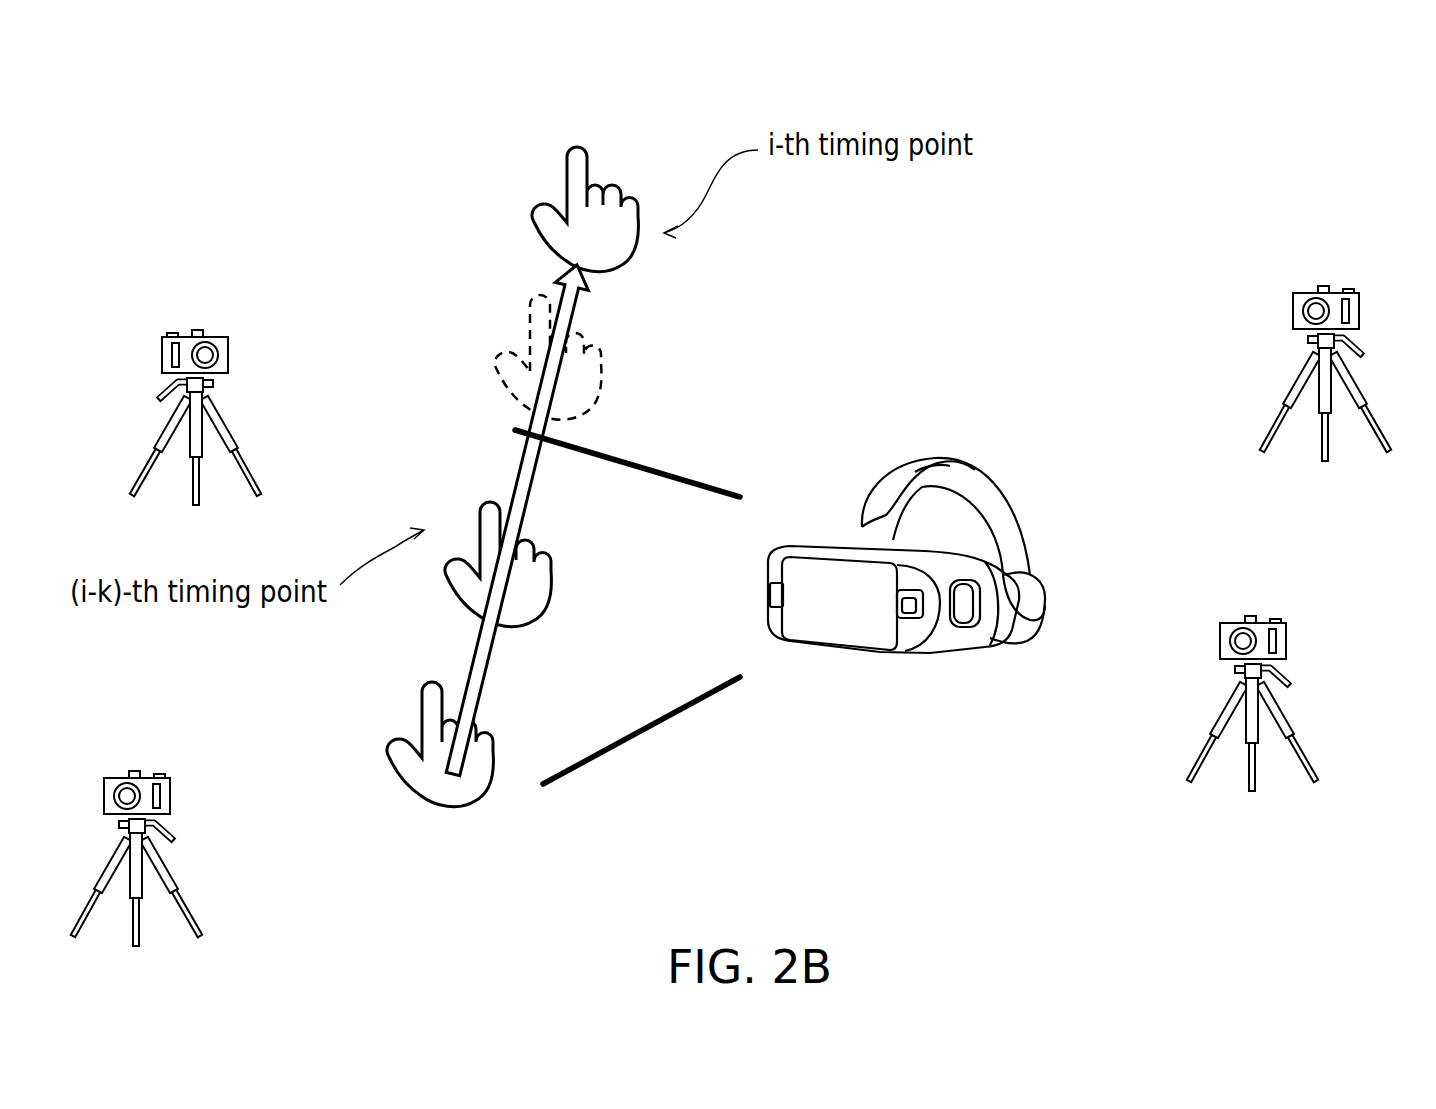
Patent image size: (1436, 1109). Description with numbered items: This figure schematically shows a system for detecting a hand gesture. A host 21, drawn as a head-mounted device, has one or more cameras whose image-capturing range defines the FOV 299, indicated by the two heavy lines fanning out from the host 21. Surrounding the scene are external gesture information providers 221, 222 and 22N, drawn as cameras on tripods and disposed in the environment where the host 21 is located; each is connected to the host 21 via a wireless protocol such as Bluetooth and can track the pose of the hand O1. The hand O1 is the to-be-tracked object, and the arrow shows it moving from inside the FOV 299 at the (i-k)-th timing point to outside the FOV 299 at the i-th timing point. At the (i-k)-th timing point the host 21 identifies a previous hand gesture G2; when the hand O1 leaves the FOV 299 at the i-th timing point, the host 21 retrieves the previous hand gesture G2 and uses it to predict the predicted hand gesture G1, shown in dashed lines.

The host 21 is at (846, 648).
The external gesture information provider 221 is at (1362, 316).
The external gesture information provider 222 is at (1289, 646).
The external gesture information provider 22N is at (230, 356).
The FOV 299 is at (647, 493).
The hand O1 is at (575, 148).
The predicted hand gesture G1 is at (534, 297).
The previous hand gesture G2 is at (482, 502).